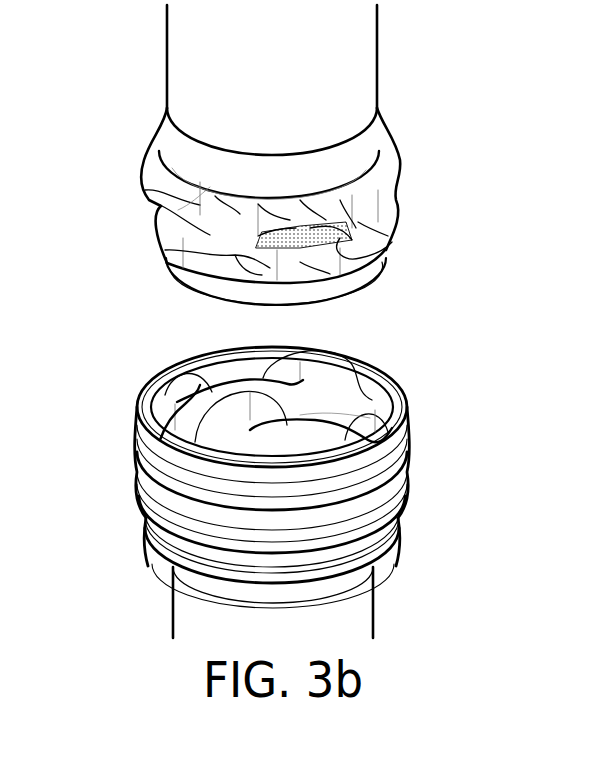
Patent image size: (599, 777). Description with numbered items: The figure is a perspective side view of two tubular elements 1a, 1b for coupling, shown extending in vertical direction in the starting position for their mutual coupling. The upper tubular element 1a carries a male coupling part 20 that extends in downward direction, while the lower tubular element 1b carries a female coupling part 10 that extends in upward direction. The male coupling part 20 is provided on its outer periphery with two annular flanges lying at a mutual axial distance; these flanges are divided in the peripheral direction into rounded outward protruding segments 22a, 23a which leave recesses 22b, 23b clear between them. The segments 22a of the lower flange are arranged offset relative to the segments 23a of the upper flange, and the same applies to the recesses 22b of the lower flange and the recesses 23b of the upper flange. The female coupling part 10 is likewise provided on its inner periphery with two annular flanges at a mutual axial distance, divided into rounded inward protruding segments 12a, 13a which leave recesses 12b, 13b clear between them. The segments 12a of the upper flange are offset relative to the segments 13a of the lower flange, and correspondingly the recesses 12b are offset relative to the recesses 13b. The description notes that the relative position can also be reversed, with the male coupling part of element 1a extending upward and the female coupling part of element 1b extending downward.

The tubular element 1a is at (151, 36).
The tubular element 1b is at (152, 617).
The male coupling part 20 is at (121, 201).
The female coupling part 10 is at (120, 447).
The outward protruding segment 22a is at (382, 235).
The recess 22b is at (312, 273).
The outward protruding segment 23a is at (314, 226).
The recess 23b is at (227, 226).
The inward protruding segment 12a is at (228, 367).
The recess 12b is at (325, 373).
The inward protruding segment 13a is at (315, 421).
The recess 13b is at (223, 407).